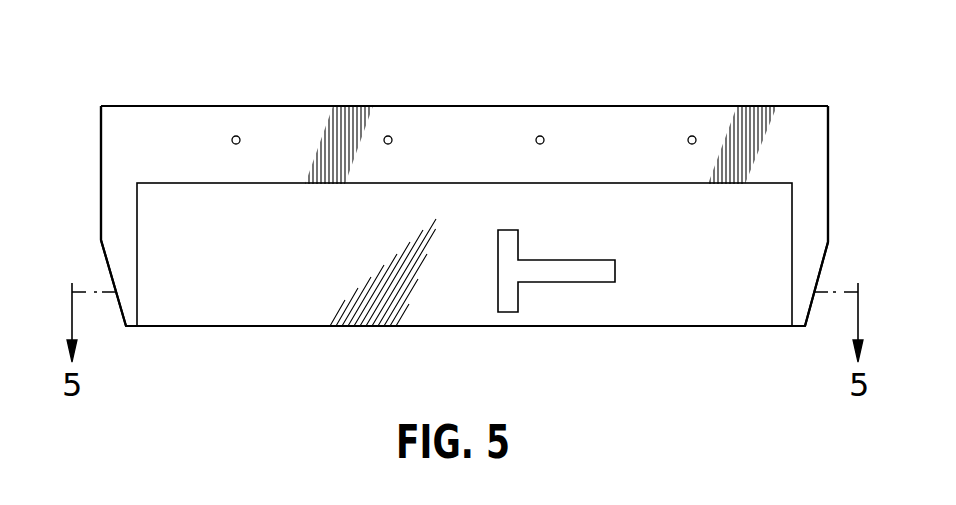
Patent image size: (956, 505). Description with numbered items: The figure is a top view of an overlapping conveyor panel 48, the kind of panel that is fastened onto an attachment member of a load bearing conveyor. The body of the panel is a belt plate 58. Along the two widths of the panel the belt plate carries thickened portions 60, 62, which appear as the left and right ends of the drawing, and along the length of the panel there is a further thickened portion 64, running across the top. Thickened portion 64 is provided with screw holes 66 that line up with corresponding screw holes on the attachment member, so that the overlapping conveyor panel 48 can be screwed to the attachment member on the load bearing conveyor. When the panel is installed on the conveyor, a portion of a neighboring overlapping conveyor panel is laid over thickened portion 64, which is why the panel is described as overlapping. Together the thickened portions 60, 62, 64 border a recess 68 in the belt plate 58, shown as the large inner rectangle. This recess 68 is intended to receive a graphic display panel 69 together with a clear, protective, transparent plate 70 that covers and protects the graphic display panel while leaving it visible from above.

The overlapping conveyor panel 48 is at (457, 53).
The belt plate 58 is at (210, 326).
The thickened portion 60 is at (101, 197).
The thickened portion 62 is at (818, 215).
The thickened portion 64 is at (310, 115).
The screw holes 66 is at (541, 134).
The recess 68 is at (725, 307).
The graphic display panel 69 is at (318, 313).
The transparent plate 70 is at (413, 310).